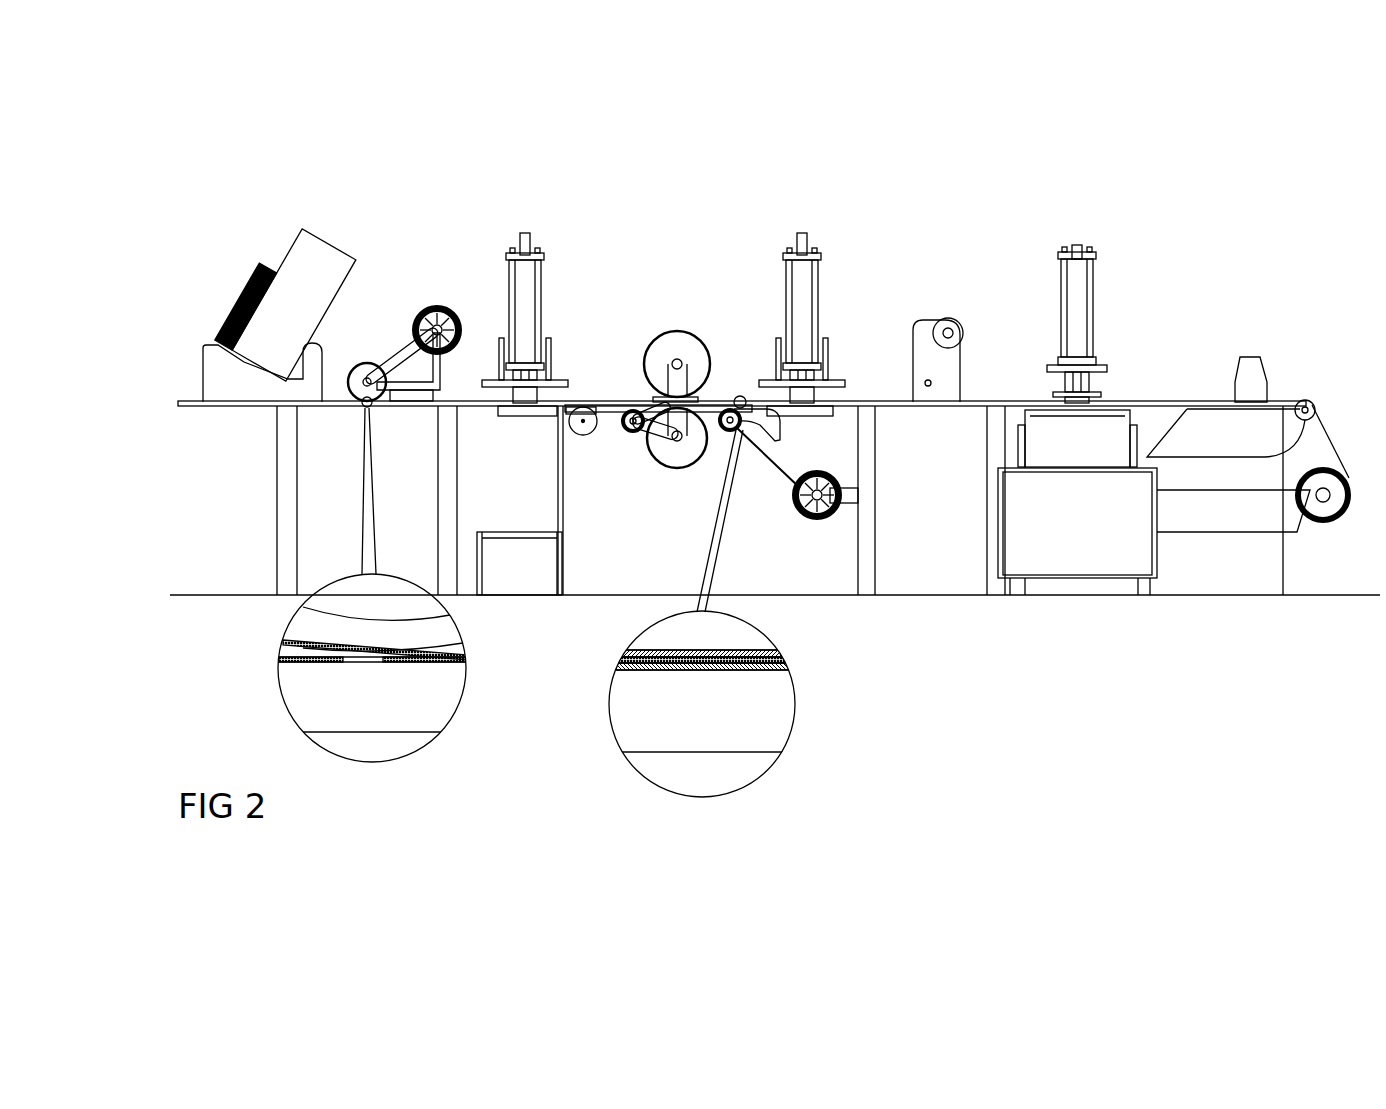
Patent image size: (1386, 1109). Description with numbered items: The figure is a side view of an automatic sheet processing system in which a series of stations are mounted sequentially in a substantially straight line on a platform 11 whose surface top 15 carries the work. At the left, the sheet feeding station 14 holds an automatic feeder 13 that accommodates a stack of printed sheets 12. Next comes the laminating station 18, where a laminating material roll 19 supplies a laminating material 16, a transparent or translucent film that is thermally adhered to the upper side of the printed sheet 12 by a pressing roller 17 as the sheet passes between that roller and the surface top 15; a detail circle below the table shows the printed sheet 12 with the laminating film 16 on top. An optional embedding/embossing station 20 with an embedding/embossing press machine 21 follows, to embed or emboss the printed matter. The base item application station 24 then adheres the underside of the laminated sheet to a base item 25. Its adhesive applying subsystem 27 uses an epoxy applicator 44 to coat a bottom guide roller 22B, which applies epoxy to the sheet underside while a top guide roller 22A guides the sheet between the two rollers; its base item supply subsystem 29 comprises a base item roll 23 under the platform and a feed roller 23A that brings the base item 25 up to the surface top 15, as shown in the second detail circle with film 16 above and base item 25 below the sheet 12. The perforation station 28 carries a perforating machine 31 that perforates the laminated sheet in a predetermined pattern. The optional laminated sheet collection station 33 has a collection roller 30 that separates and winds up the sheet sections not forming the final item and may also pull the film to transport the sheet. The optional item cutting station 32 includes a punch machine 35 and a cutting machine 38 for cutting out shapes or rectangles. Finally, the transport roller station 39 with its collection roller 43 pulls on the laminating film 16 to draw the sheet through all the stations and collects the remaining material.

The platform 11 is at (863, 532).
The printed sheet 12 is at (242, 320).
The automatic feeder 13 is at (312, 244).
The sheet feeding station 14 is at (264, 190).
The surface top 15 is at (236, 407).
The laminating material 16 is at (382, 345).
The pressing roller 17 is at (360, 376).
The laminating station 18 is at (455, 193).
The laminating material roll 19 is at (440, 313).
The embedding/embossing station 20 is at (560, 182).
The embedding/embossing press machine 21 is at (527, 312).
The top guide roller 22A is at (655, 356).
The bottom guide roller 22B is at (680, 455).
The base item roll 23 is at (812, 472).
The feed roller 23A is at (724, 396).
The base item application station 24 is at (693, 255).
The base item 25 is at (772, 464).
The adhesive applying subsystem 27 is at (574, 585).
The perforation station 28 is at (841, 210).
The base item supply subsystem 29 is at (782, 518).
The collection roller 30 is at (960, 327).
The perforating machine 31 is at (806, 308).
The item cutting station 32 is at (1197, 267).
The laminated sheet collection station 33 is at (941, 284).
The punch machine 35 is at (1077, 313).
The cutting machine 38 is at (1245, 357).
The transport roller station 39 is at (1343, 402).
The collection roller 43 is at (1337, 520).
The epoxy applicator 44 is at (622, 432).